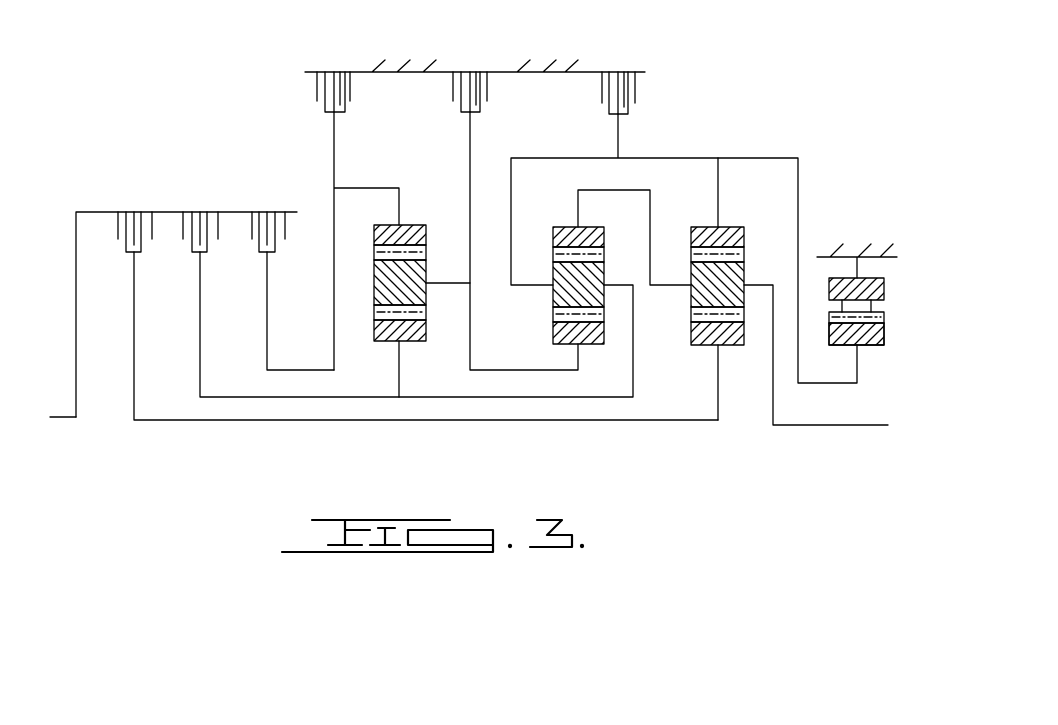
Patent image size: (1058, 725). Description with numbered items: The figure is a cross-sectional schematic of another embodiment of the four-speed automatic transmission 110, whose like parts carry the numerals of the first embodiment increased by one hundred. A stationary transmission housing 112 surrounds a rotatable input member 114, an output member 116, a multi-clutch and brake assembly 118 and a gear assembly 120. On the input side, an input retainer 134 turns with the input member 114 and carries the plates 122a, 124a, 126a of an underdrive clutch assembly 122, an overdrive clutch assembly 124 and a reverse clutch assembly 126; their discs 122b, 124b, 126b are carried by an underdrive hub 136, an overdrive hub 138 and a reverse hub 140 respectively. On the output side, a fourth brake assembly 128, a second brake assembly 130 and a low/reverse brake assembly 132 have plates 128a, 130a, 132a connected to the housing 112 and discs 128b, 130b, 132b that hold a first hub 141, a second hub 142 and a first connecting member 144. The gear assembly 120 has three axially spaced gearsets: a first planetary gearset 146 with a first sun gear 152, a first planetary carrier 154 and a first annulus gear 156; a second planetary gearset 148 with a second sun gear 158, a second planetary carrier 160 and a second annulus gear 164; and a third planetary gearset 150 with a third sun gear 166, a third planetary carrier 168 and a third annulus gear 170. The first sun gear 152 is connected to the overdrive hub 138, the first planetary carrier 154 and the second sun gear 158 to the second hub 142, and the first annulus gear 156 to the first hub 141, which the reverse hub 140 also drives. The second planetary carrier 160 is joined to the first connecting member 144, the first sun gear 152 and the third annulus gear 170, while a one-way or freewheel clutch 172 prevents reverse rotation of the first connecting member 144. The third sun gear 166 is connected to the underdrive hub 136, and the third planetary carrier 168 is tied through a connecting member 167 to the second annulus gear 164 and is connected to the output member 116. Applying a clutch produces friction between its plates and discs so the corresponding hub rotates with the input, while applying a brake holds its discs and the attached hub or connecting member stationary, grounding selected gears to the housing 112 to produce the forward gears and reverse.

The four-speed automatic transmission 110 is at (765, 107).
The transmission housing 112 is at (372, 72).
The input member 114 is at (66, 418).
The output member 116 is at (797, 426).
The multi-clutch and brake assembly 118 is at (173, 211).
The gear assembly 120 is at (735, 226).
The underdrive clutch assembly 122 is at (101, 228).
The plates 122a is at (128, 226).
The discs 122b is at (123, 252).
The overdrive clutch assembly 124 is at (203, 232).
The plates 124a is at (206, 246).
The discs 124b is at (194, 252).
The reverse clutch assembly 126 is at (289, 231).
The plates 126a is at (276, 218).
The discs 126b is at (275, 252).
The fourth brake assembly 128 is at (328, 78).
The plates 128a is at (317, 93).
The discs 128b is at (345, 110).
The second brake assembly 130 is at (464, 78).
The plates 130a is at (453, 93).
The discs 130b is at (478, 110).
The low/reverse brake assembly 132 is at (618, 77).
The plates 132a is at (602, 88).
The discs 132b is at (628, 110).
The input retainer 134 is at (228, 212).
The underdrive hub 136 is at (132, 350).
The overdrive hub 138 is at (198, 337).
The reverse hub 140 is at (267, 320).
The first hub 141 is at (335, 158).
The second hub 142 is at (470, 172).
The first connecting member 144 is at (698, 160).
The first planetary gearset 146 is at (408, 294).
The second planetary gearset 148 is at (553, 227).
The third planetary gearset 150 is at (693, 226).
The first sun gear 152 is at (382, 333).
The first planetary carrier 154 is at (378, 273).
The first annulus gear 156 is at (413, 237).
The second sun gear 158 is at (560, 341).
The second planetary carrier 160 is at (563, 290).
The second annulus gear 164 is at (605, 240).
The third sun gear 166 is at (713, 341).
The connecting member 167 is at (675, 287).
The third planetary carrier 168 is at (738, 283).
The third annulus gear 170 is at (741, 238).
The one-way or freewheel clutch 172 is at (850, 317).